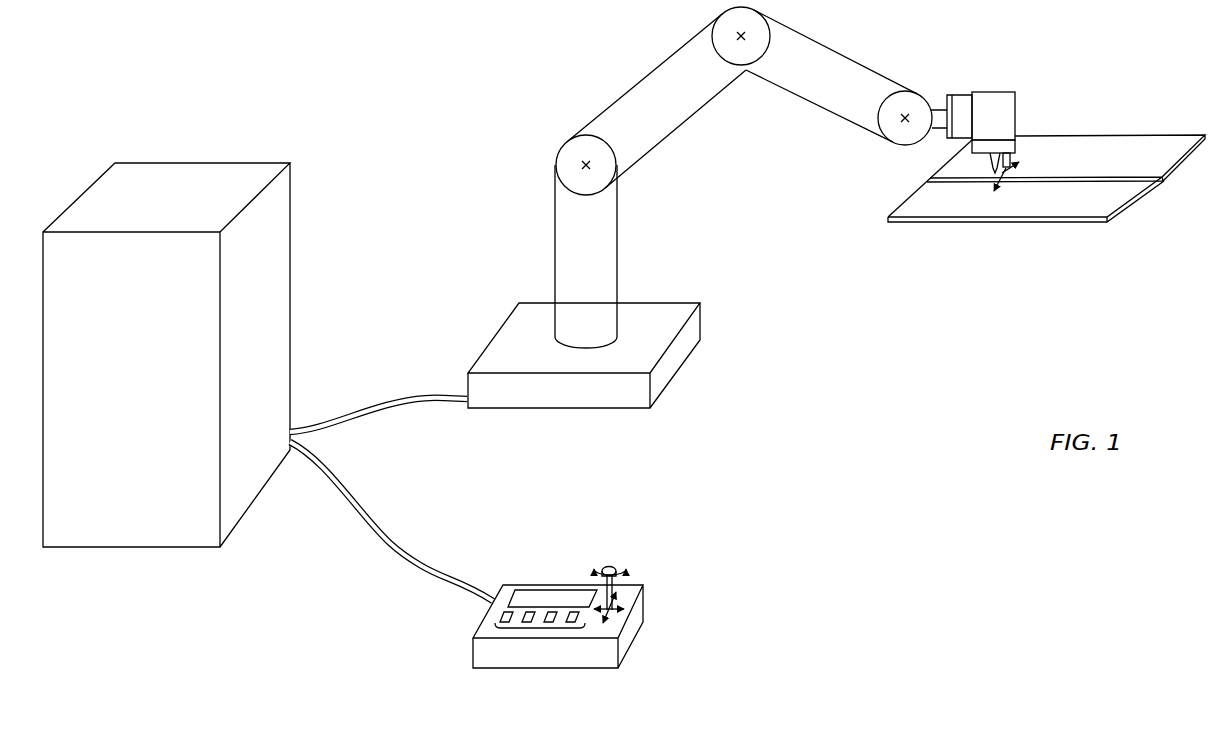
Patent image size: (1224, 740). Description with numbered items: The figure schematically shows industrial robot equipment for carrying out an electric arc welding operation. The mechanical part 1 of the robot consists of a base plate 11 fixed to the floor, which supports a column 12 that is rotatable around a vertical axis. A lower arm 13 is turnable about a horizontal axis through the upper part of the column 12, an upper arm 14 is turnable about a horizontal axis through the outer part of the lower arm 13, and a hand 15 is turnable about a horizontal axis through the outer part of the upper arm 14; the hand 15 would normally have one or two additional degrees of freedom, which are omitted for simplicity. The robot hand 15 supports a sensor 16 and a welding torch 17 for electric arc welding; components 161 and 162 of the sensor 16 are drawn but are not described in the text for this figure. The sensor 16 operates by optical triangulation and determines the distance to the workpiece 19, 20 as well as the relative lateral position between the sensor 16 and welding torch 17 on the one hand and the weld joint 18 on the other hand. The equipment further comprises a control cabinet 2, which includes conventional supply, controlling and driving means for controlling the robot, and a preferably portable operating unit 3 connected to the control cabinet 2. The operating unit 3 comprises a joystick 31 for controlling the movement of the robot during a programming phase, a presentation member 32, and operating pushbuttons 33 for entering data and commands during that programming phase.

The mechanical part of the robot 1 is at (775, 229).
The control cabinet 2 is at (138, 535).
The operating unit 3 is at (555, 620).
The base plate 11 is at (575, 395).
The column 12 is at (607, 267).
The lower arm 13 is at (687, 100).
The upper arm 14 is at (825, 95).
The hand 15 is at (944, 110).
The sensor 16 is at (1027, 123).
The tool body 161 is at (1008, 102).
The sensor nozzle 162 is at (1015, 152).
The welding torch 17 is at (988, 164).
The weld joint 18 is at (1053, 198).
The workpiece 19 is at (1103, 203).
The workpiece 20 is at (1167, 147).
The joystick 31 is at (613, 565).
The presentation member 32 is at (538, 597).
The operating pushbuttons 33 is at (533, 628).